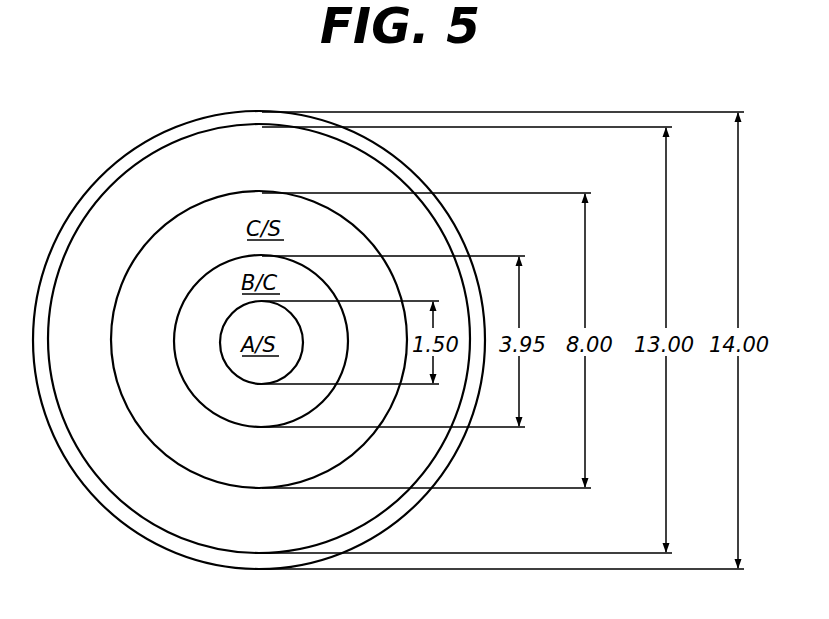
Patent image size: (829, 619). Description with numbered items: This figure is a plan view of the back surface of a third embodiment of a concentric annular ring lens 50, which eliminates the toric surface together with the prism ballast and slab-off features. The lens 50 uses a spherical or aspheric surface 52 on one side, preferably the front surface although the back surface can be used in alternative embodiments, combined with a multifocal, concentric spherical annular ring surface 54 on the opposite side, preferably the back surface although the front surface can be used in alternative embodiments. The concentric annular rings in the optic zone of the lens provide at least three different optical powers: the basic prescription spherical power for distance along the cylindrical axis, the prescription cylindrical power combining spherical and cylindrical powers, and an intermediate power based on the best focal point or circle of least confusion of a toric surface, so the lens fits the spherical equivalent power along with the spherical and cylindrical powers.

The concentric annular ring lens 50 is at (118, 140).
The multifocal, concentric spherical annular ring surface 54 is at (120, 222).
The spherical or aspheric surface 52 is at (325, 163).